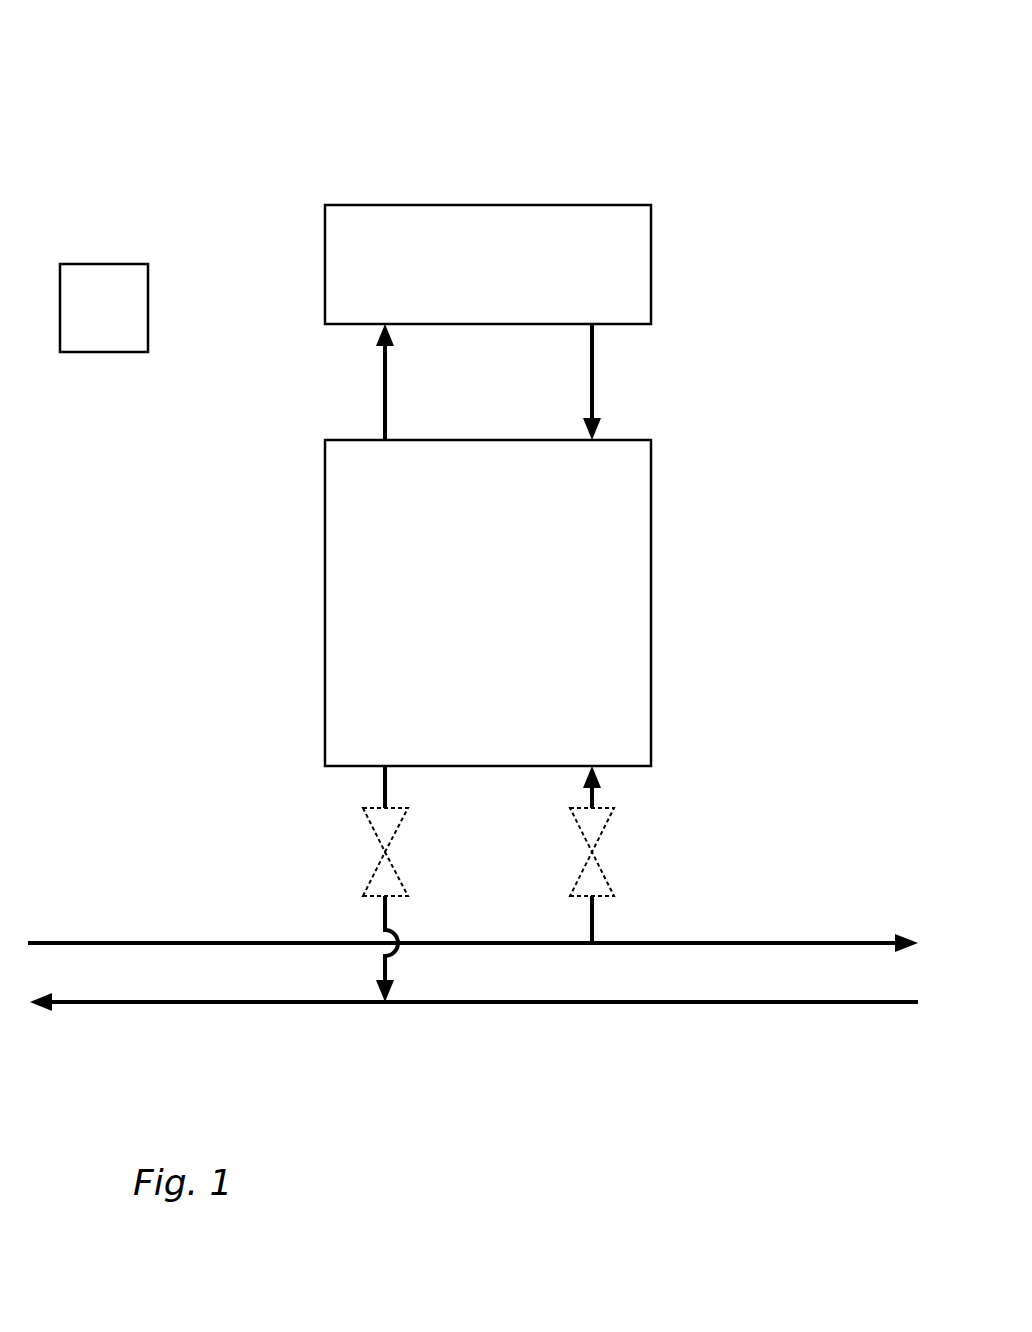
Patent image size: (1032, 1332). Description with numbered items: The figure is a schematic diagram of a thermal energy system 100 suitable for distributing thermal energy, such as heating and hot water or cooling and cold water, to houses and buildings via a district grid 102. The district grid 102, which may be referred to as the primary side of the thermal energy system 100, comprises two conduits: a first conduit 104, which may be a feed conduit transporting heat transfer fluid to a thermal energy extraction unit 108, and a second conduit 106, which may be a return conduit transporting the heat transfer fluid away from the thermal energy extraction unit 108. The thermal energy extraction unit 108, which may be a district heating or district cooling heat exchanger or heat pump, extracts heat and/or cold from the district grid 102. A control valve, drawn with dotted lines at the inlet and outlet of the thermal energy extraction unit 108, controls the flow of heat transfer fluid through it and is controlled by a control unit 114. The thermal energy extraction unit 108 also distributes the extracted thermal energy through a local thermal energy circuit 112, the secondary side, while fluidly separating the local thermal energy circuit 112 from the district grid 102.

The thermal energy system 100 is at (104, 139).
The district grid 102 is at (508, 1048).
The first conduit 104 is at (763, 942).
The second conduit 106 is at (686, 1003).
The thermal energy extraction unit 108 is at (620, 579).
The local thermal energy circuit 112 is at (621, 263).
The control unit 114 is at (118, 305).